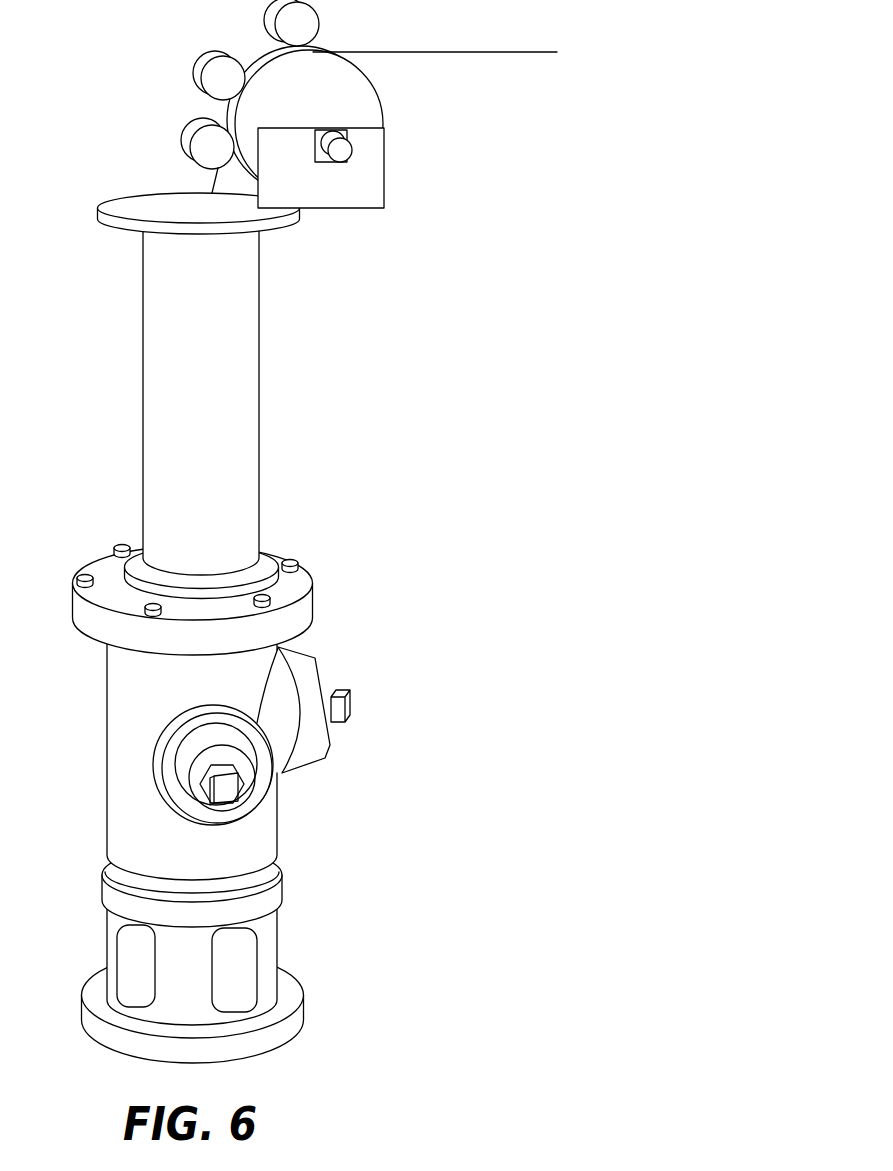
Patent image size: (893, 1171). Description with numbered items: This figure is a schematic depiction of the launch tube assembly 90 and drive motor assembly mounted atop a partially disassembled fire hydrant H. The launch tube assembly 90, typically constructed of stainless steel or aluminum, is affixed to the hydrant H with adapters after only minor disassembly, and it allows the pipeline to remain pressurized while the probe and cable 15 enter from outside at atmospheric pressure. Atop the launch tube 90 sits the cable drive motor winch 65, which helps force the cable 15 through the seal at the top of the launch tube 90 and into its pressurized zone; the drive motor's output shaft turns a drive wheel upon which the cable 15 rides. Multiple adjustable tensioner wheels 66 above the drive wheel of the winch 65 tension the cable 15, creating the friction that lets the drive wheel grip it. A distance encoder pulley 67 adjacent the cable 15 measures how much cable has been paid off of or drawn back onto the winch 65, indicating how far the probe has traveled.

The cable 15 is at (457, 52).
The cable drive motor winch 65 is at (362, 95).
The adjustable tensioner wheels 66 is at (280, 23).
The distance encoder pulley 67 is at (362, 160).
The launch tube assembly 90 is at (157, 395).
The fire hydrant H is at (120, 757).